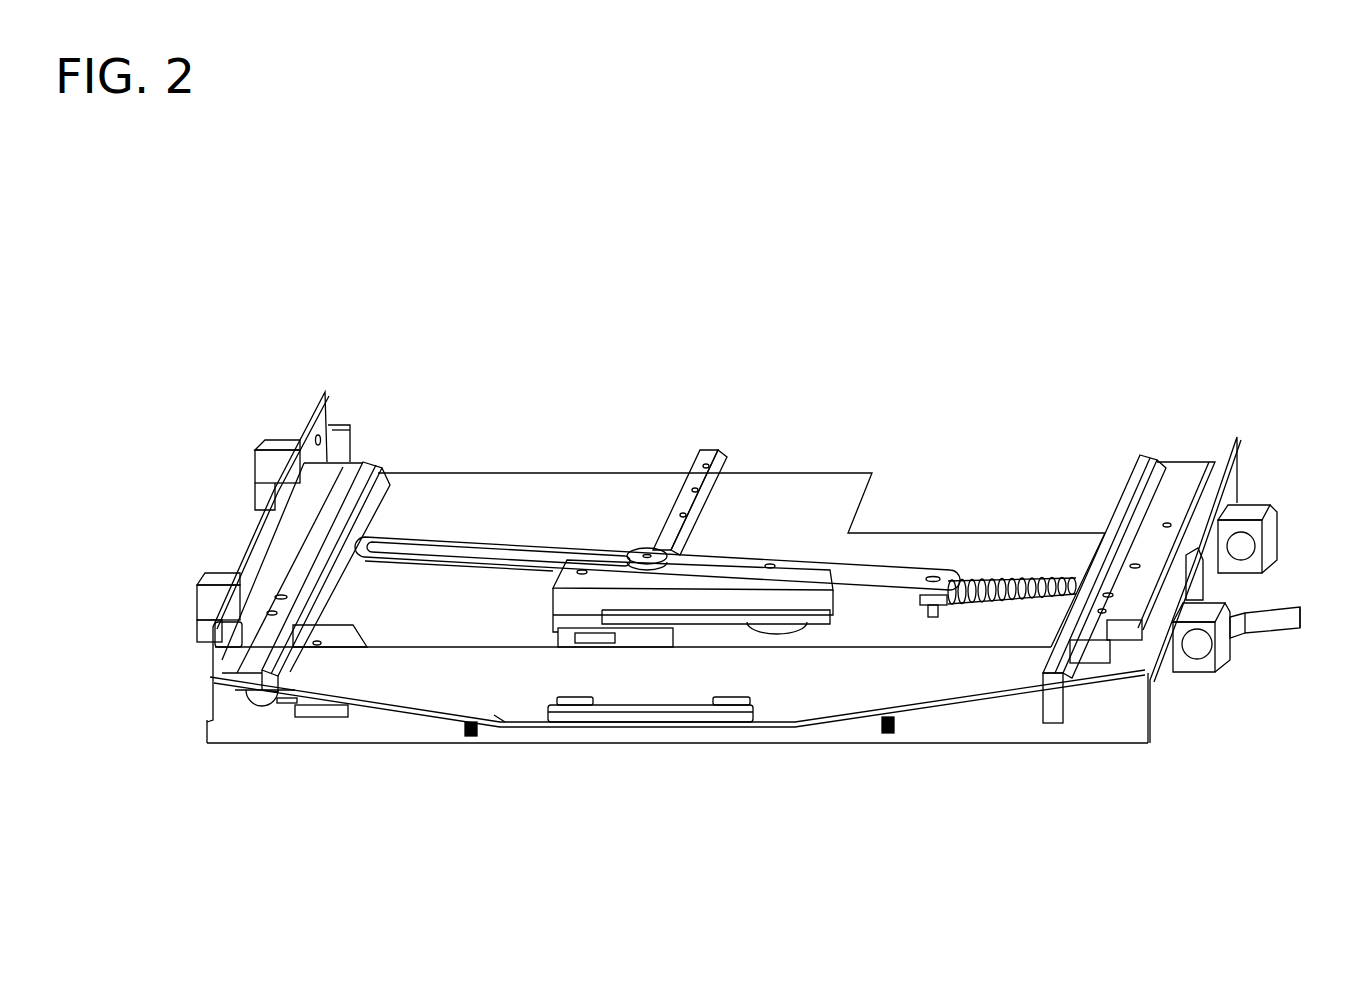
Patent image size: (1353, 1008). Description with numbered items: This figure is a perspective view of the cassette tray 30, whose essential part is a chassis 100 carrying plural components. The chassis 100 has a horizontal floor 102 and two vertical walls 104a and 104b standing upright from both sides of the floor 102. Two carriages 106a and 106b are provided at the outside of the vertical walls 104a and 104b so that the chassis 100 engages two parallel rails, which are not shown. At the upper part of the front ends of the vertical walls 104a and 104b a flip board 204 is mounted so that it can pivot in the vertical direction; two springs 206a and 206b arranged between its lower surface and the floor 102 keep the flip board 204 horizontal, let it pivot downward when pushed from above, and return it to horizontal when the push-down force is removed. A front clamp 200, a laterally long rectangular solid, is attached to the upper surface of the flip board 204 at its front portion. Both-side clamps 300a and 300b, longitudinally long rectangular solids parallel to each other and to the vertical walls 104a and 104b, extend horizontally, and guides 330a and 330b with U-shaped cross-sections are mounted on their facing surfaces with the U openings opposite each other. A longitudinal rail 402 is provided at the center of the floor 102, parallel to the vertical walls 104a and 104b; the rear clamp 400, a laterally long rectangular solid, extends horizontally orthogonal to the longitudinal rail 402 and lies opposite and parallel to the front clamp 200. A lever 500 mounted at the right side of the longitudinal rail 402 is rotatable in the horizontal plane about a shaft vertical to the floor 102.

The cassette tray 30 is at (717, 121).
The chassis 100 is at (613, 465).
The horizontal floor 102 is at (512, 492).
The vertical wall 104a is at (1232, 473).
The vertical wall 104b is at (318, 442).
The carriage 106a is at (1247, 512).
The carriage 106b is at (272, 445).
The front clamp 200 is at (637, 715).
The flip board 204 is at (497, 713).
The spring 206a is at (889, 735).
The spring 206b is at (477, 738).
The both-side clamp 300a is at (1170, 480).
The both-side clamp 300b is at (332, 473).
The guide 330a is at (1145, 463).
The guide 330b is at (368, 465).
The rear clamp 400 is at (745, 597).
The longitudinal rail 402 is at (707, 450).
The lever 500 is at (900, 570).